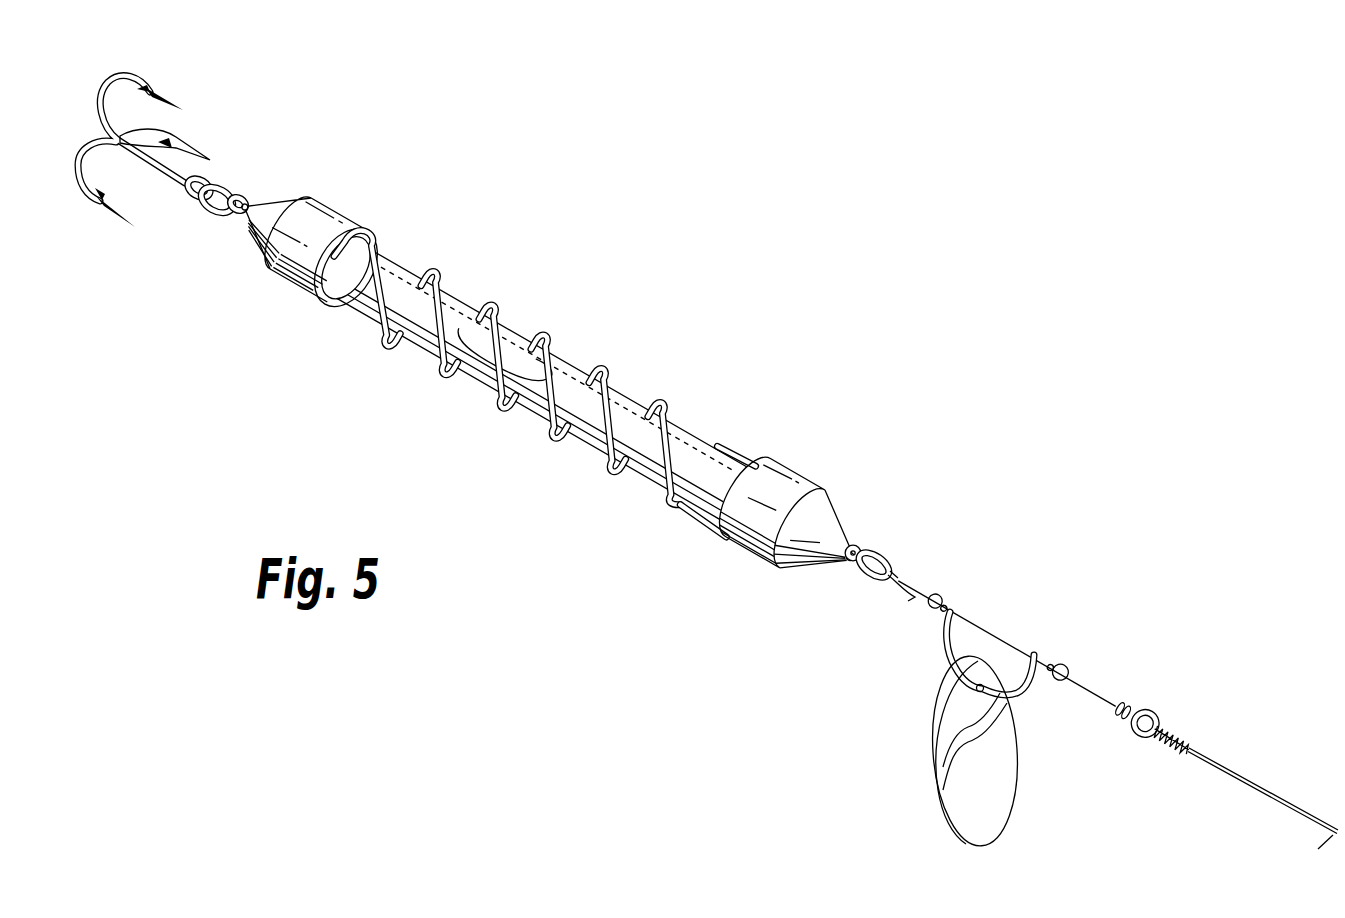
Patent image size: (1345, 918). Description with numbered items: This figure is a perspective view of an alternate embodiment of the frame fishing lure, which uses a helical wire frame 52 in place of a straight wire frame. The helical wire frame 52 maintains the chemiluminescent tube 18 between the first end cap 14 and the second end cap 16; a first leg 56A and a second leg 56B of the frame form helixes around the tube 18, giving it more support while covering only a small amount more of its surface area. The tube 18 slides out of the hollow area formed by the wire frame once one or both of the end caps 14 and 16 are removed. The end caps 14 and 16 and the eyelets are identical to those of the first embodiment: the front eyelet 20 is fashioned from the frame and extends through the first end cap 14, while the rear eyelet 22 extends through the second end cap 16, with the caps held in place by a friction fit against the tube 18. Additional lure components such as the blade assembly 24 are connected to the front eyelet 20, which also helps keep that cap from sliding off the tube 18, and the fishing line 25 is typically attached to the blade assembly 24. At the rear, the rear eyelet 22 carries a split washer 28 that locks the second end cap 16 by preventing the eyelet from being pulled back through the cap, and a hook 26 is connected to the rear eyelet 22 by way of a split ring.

The first end cap 14 is at (801, 487).
The second end cap 16 is at (346, 195).
The chemiluminescent tube 18 is at (587, 400).
The front eyelet 20 is at (881, 552).
The rear eyelet 22 is at (245, 197).
The blade assembly 24 is at (991, 636).
The fishing line 25 is at (1221, 766).
The hook 26 is at (170, 141).
The split washer 28 is at (226, 192).
The helical wire frame 52 is at (507, 305).
The first leg 56A is at (734, 452).
The second leg 56B is at (703, 517).